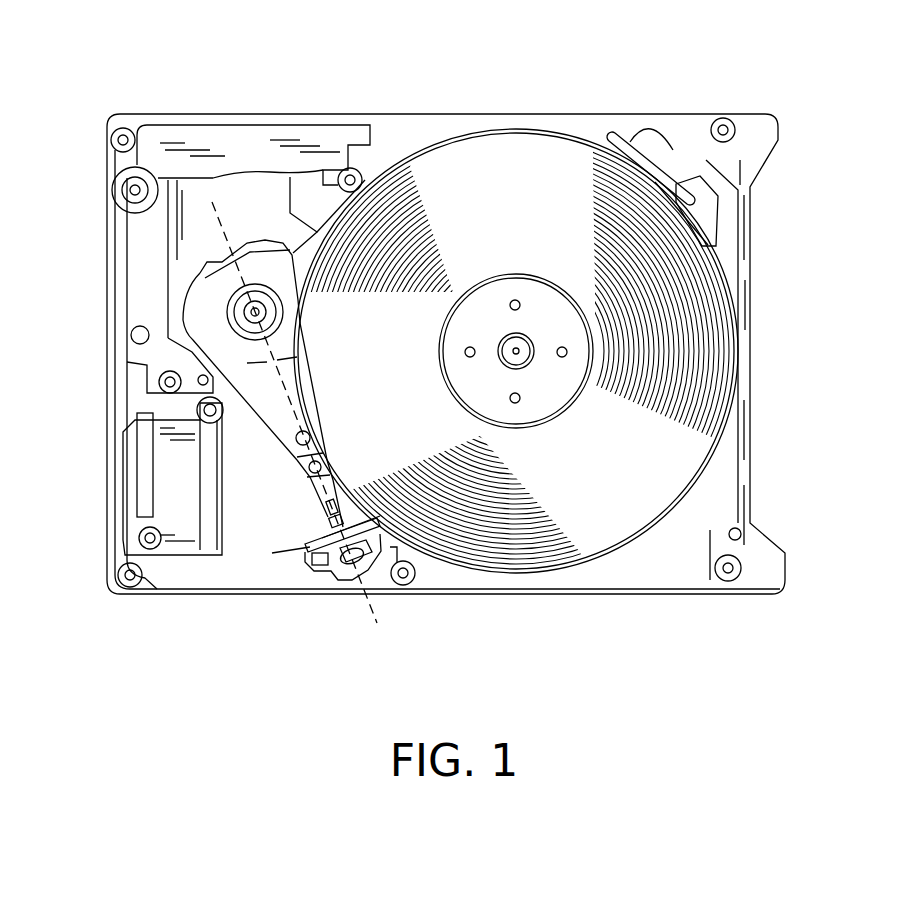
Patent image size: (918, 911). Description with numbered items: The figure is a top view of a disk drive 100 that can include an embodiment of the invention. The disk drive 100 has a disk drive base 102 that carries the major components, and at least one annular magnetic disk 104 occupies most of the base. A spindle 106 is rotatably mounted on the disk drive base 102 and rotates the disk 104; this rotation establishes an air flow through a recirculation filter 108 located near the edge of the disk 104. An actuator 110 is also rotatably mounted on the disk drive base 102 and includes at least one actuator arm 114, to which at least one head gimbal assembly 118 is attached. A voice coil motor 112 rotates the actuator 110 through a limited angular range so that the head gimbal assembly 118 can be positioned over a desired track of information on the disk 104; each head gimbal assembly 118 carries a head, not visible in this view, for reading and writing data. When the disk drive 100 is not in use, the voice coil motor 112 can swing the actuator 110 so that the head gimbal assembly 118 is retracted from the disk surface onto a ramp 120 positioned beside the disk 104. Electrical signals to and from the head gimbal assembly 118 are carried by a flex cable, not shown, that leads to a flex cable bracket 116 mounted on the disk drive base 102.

The disk drive 100 is at (376, 74).
The disk drive base 102 is at (750, 476).
The annular magnetic disk 104 is at (510, 145).
The spindle 106 is at (532, 292).
The recirculation filter 108 is at (655, 160).
The actuator 110 is at (243, 347).
The voice coil motor 112 is at (262, 200).
The actuator arm 114 is at (290, 423).
The flex cable bracket 116 is at (180, 490).
The head gimbal assembly 118 is at (390, 487).
The ramp 120 is at (328, 563).